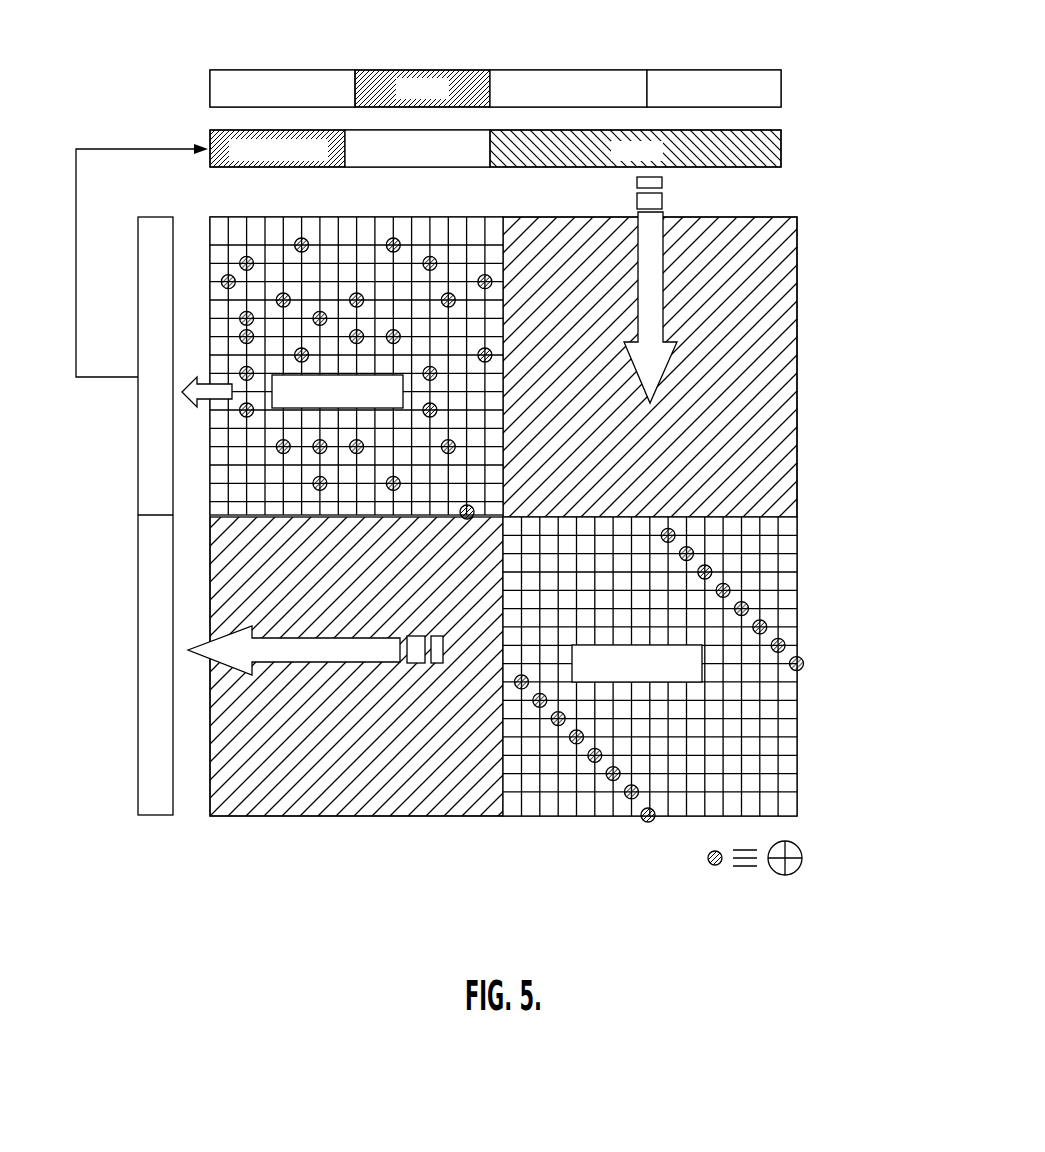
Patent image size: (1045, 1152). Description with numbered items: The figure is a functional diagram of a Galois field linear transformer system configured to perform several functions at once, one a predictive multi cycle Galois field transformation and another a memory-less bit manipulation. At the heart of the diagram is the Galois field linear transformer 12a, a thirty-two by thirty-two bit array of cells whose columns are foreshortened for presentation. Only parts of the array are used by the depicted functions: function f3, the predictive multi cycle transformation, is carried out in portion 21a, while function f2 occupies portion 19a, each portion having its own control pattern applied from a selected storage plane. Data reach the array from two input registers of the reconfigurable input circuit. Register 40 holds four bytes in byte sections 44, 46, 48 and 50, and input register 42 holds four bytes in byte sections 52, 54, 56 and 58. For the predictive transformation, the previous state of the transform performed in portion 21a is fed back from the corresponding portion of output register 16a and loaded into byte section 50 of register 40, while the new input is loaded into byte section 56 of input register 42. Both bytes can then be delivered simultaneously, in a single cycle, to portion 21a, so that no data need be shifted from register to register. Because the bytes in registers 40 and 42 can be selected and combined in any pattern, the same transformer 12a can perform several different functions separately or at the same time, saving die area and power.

The input register 42 is at (787, 73).
The byte section 58 is at (288, 68).
The byte section 56 is at (397, 68).
The byte section 54 is at (538, 68).
The byte section 52 is at (683, 68).
The register 40 is at (789, 135).
The byte section 50 is at (272, 168).
The byte section 48 is at (437, 168).
The byte section 46 is at (558, 168).
The byte section 44 is at (697, 168).
The Galois field linear transformer 12a is at (543, 499).
The portion 21a is at (352, 212).
The portion 19a is at (797, 602).
The output register 16a is at (155, 815).